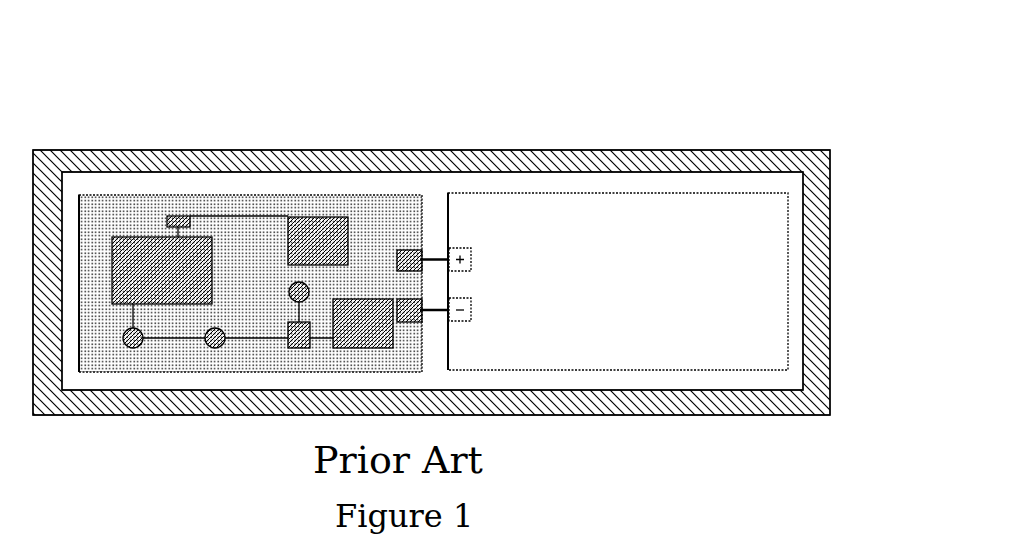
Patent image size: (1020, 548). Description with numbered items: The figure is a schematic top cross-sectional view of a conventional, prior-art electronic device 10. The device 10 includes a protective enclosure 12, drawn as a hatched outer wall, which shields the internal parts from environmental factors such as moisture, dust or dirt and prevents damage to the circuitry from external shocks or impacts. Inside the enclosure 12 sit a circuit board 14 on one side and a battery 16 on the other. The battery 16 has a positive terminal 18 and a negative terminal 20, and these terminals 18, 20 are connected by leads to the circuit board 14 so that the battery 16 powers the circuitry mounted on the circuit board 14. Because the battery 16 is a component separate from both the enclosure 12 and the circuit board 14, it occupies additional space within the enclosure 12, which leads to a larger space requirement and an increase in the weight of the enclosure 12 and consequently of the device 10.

The conventional electronic device 10 is at (474, 212).
The protective enclosure 12 is at (783, 147).
The circuit board 14 is at (163, 192).
The battery 16 is at (637, 192).
The positive terminal 18 is at (457, 247).
The negative terminal 20 is at (465, 296).